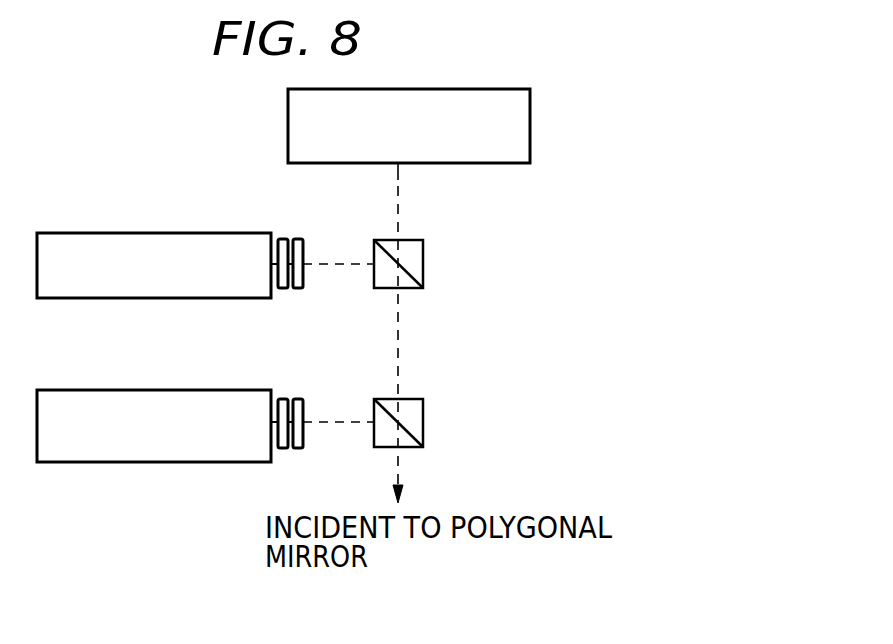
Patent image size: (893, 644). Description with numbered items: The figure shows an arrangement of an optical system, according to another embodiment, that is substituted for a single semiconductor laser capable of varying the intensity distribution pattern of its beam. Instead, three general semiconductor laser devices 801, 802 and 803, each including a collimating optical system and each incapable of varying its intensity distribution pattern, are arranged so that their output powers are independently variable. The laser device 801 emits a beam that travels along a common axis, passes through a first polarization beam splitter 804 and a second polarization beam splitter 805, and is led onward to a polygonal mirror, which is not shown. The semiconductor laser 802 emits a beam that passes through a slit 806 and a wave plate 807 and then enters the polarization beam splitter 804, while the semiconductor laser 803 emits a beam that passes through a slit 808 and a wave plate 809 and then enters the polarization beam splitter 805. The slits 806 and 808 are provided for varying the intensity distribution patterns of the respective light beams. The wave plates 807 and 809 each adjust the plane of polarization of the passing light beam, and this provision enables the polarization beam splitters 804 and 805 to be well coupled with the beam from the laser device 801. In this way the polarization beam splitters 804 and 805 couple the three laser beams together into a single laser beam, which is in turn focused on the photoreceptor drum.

The semiconductor laser device 801 is at (493, 89).
The semiconductor laser 802 is at (196, 233).
The semiconductor laser 803 is at (200, 390).
The polarization beam splitter 804 is at (408, 240).
The polarization beam splitter 805 is at (408, 399).
The slit 806 is at (284, 239).
The wave plate 807 is at (304, 241).
The slit 808 is at (284, 399).
The wave plate 809 is at (304, 400).